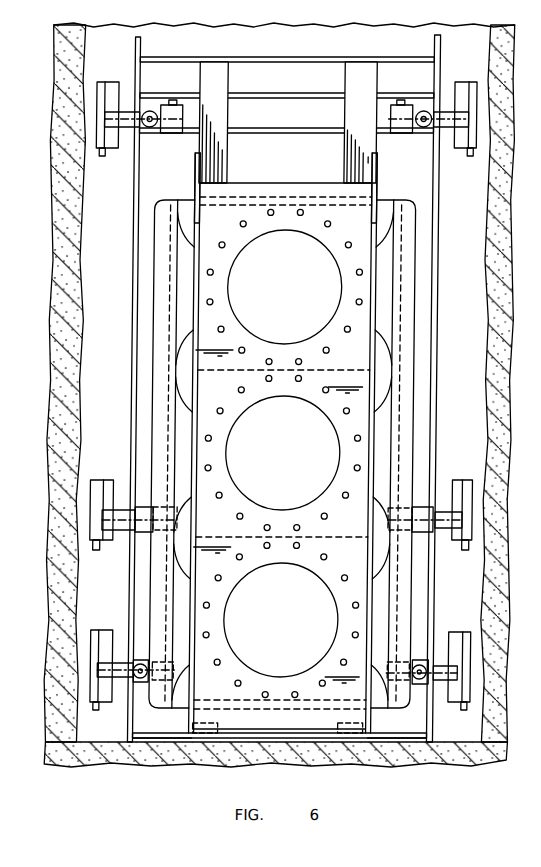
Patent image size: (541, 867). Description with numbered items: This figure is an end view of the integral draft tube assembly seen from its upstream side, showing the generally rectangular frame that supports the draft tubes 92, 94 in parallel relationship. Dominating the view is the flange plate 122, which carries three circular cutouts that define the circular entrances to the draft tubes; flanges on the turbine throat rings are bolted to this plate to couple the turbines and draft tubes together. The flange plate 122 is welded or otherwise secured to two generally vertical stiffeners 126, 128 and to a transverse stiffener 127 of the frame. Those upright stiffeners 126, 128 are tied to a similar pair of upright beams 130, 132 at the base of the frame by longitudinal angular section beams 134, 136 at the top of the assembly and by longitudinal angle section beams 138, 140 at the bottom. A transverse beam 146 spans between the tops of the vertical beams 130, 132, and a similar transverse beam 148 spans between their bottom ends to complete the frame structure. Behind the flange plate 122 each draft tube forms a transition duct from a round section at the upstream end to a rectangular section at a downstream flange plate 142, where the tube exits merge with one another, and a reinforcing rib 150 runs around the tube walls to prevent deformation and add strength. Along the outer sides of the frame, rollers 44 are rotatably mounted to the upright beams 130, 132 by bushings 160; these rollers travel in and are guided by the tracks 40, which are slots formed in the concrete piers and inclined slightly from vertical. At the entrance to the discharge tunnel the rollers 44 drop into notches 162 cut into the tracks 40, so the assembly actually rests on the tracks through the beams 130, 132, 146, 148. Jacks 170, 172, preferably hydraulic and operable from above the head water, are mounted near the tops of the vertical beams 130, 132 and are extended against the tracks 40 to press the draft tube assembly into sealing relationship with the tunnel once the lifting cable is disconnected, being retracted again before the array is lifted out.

The tracks 40 is at (280, 395).
The rollers 44 is at (100, 152).
The draft tube 92 is at (190, 293).
The draft tube 94 is at (393, 424).
The flange plate 122 is at (309, 192).
The vertical stiffener 126 is at (195, 165).
The transverse stiffener 127 is at (272, 740).
The vertical stiffener 128 is at (380, 163).
The upright beam 130 is at (137, 58).
The upright beam 132 is at (443, 60).
The angular section beam 134 is at (230, 73).
The angular section beam 136 is at (346, 73).
The angle section beam 138 is at (202, 740).
The angle section beam 140 is at (411, 740).
The flange plate 142 is at (151, 337).
The transverse beam 146 is at (234, 60).
The transverse beam 148 is at (352, 740).
The reinforcing rib 150 is at (420, 248).
The bushings 160 is at (150, 660).
The notches 162 is at (118, 138).
The jack 170 is at (170, 84).
The jack 172 is at (148, 683).